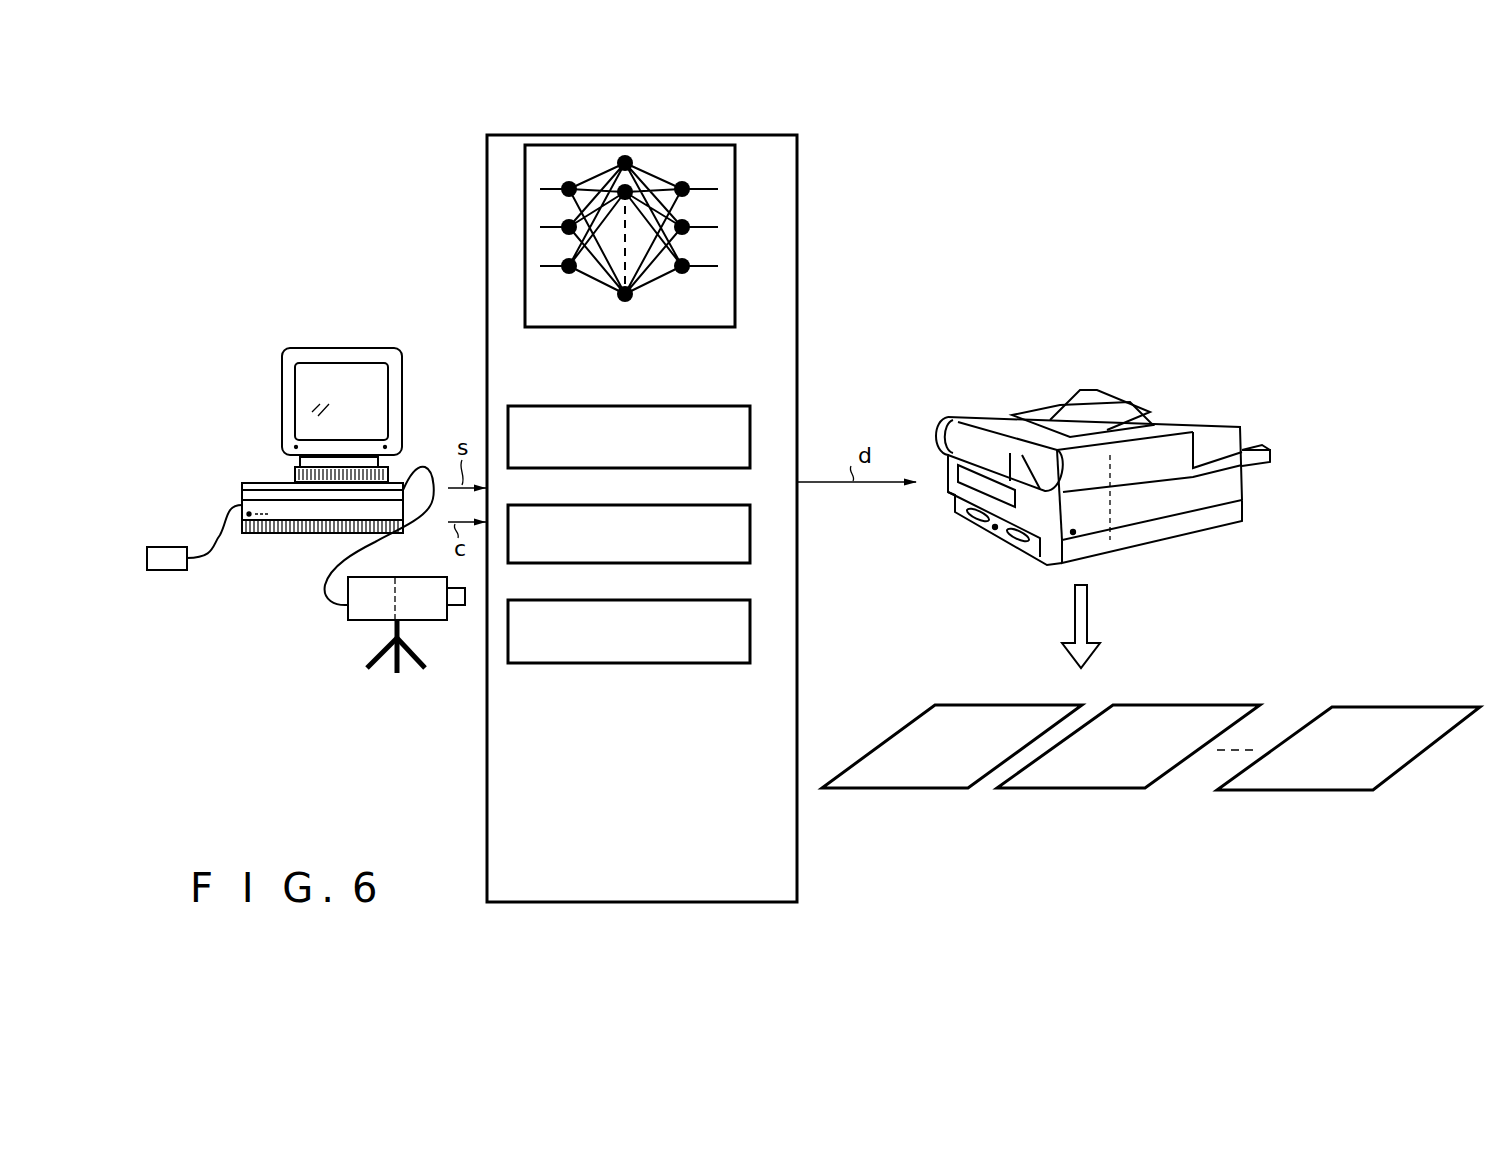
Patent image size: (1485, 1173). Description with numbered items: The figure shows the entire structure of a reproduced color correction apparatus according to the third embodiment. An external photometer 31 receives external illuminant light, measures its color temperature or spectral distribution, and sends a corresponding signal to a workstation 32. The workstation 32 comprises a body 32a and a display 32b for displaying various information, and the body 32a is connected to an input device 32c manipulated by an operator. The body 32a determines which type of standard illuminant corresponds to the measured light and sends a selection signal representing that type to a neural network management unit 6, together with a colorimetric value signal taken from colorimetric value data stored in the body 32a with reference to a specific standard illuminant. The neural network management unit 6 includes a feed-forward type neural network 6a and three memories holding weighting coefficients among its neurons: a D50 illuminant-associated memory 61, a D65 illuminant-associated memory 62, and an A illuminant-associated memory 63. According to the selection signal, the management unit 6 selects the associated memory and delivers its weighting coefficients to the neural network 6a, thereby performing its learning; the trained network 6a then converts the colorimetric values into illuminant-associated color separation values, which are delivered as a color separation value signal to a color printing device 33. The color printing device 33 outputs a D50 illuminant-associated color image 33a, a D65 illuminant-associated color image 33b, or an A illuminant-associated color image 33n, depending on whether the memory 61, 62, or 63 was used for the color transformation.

The neural network management unit 6 is at (797, 246).
The feed-forward type neural network 6a is at (735, 205).
The D50 illuminant-associated memory 61 is at (772, 416).
The D65 illuminant-associated memory 62 is at (772, 517).
The A illuminant-associated memory 63 is at (749, 628).
The external photometer 31 is at (350, 622).
The workstation 32 is at (305, 450).
The body 32a is at (260, 482).
The display 32b is at (430, 388).
The input device 32c is at (170, 572).
The color printing device 33 is at (1187, 412).
The D50 illuminant-associated color image 33a is at (955, 712).
The D65 illuminant-associated color image 33b is at (1197, 708).
The A illuminant-associated color image 33n is at (1333, 783).